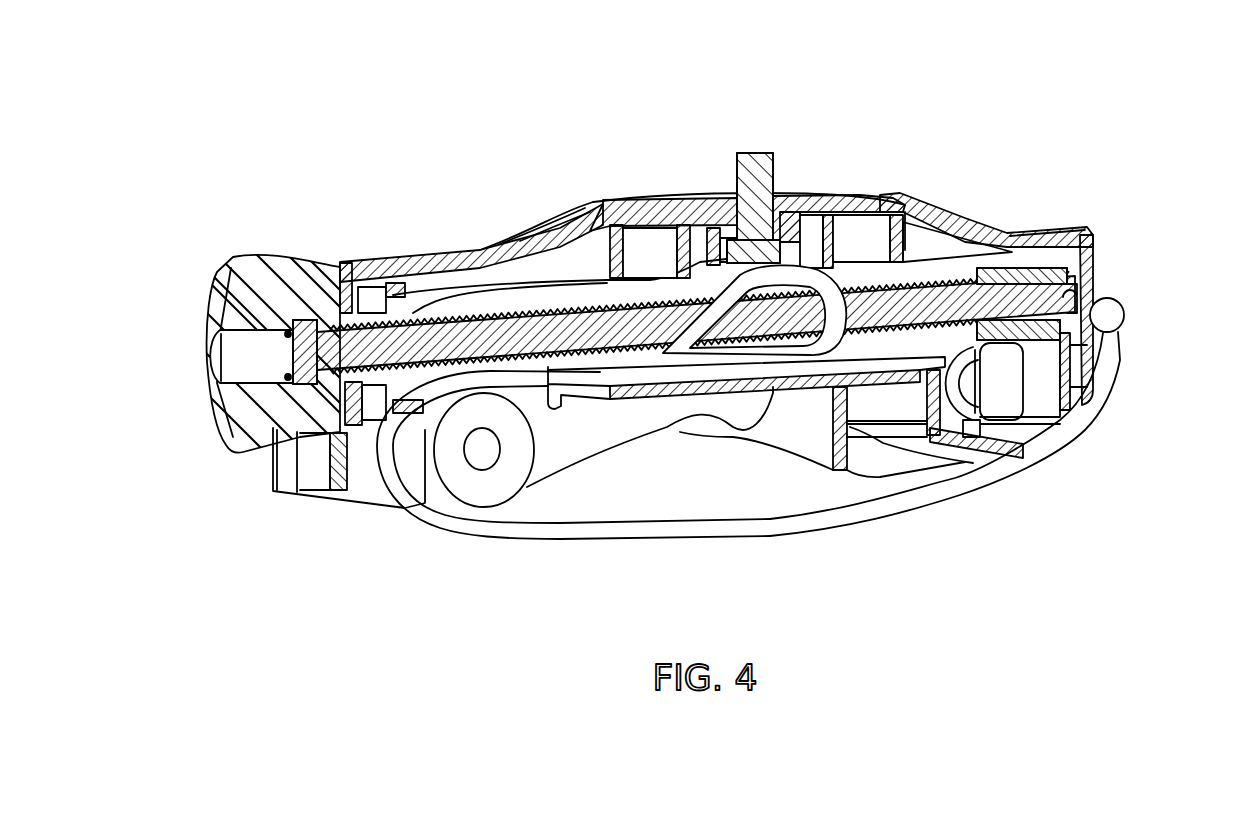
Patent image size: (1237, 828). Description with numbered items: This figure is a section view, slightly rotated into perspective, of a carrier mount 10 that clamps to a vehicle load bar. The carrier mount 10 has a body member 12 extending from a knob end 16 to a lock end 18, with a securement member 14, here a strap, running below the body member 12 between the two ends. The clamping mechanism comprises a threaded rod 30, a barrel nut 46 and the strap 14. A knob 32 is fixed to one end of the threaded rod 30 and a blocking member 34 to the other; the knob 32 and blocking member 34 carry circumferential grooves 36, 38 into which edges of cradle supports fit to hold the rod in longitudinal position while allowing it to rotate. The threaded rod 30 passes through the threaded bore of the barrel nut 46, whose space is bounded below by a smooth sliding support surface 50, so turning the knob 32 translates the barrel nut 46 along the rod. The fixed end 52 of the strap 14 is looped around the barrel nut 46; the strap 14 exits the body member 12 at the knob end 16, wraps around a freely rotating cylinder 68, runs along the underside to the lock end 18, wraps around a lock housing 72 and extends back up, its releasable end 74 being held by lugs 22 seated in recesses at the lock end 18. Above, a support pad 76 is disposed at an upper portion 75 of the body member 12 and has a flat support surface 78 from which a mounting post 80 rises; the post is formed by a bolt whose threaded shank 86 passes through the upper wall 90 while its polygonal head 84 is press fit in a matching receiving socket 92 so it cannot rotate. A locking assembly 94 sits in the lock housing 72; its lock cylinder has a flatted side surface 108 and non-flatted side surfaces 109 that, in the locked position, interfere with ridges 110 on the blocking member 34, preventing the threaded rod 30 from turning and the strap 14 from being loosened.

The carrier mount 10 is at (400, 92).
The body member 12 is at (963, 217).
The securement member 14 is at (622, 540).
The knob end 16 is at (290, 540).
The lock end 18 is at (1080, 487).
The lug 22 is at (1125, 303).
The threaded rod 30 is at (555, 338).
The knob 32 is at (262, 282).
The blocking member 34 is at (1088, 348).
The circumferential groove 36 is at (372, 300).
The circumferential groove 38 is at (1070, 262).
The barrel nut 46 is at (712, 252).
The sliding support surface 50 is at (858, 370).
The fixed end 52 is at (843, 268).
The cylinder 68 is at (413, 455).
The lock housing 72 is at (893, 448).
The releasable end 74 is at (1125, 352).
The upper portion 75 is at (438, 245).
The support pad 76 is at (595, 200).
The support surface 78 is at (630, 200).
The mounting post 80 is at (747, 135).
The head 84 is at (807, 238).
The threaded shank 86 is at (738, 205).
The upper wall 90 is at (590, 207).
The receiving socket 92 is at (665, 248).
The locking assembly 94 is at (1052, 399).
The flatted side surface 108 is at (1007, 240).
The non-flatted side surfaces 109 is at (968, 458).
The ridges 110 is at (960, 265).